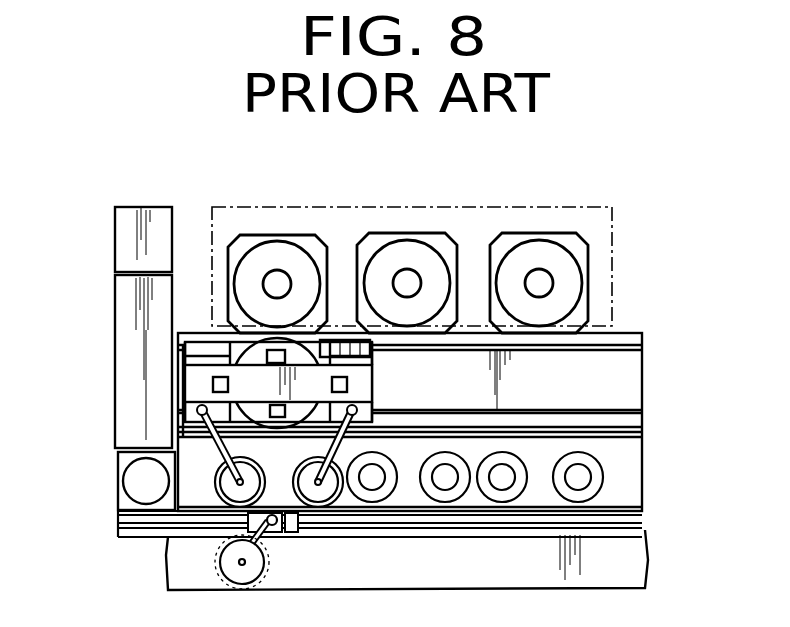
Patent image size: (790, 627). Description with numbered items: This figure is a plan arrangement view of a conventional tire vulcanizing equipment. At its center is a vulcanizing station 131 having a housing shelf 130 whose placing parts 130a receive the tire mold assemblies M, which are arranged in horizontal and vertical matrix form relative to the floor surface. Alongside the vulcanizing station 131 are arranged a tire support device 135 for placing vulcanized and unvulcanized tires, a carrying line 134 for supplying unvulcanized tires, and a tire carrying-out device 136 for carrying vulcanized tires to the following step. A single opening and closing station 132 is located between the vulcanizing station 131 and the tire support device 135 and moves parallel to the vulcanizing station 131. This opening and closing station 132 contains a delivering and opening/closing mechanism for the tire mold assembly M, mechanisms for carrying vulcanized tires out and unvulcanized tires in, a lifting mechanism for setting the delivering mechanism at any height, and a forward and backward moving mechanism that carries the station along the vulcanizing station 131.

The housing shelf 130 is at (578, 207).
The placing parts 130a is at (450, 243).
The vulcanizing station 131 is at (620, 204).
The opening and closing station 132 is at (176, 383).
The carrying line 134 is at (632, 515).
The tire support device 135 is at (628, 463).
The tire carrying-out device 136 is at (633, 557).
The tire mold assembly M is at (276, 250).